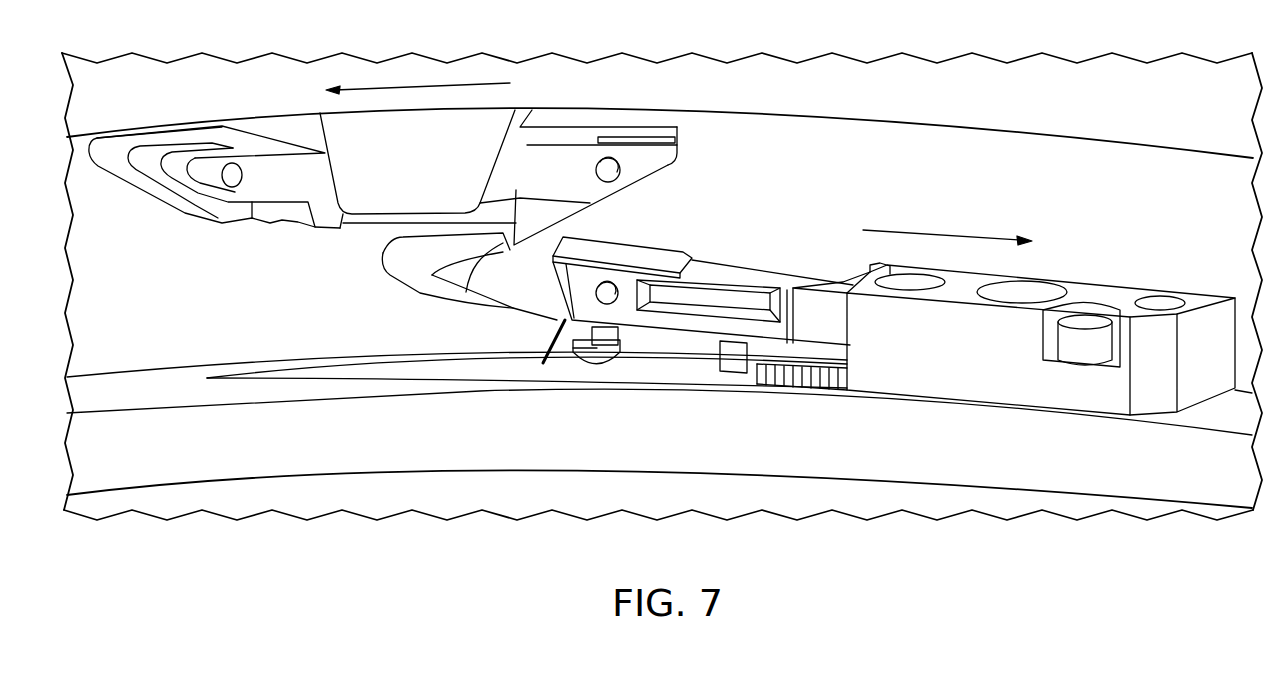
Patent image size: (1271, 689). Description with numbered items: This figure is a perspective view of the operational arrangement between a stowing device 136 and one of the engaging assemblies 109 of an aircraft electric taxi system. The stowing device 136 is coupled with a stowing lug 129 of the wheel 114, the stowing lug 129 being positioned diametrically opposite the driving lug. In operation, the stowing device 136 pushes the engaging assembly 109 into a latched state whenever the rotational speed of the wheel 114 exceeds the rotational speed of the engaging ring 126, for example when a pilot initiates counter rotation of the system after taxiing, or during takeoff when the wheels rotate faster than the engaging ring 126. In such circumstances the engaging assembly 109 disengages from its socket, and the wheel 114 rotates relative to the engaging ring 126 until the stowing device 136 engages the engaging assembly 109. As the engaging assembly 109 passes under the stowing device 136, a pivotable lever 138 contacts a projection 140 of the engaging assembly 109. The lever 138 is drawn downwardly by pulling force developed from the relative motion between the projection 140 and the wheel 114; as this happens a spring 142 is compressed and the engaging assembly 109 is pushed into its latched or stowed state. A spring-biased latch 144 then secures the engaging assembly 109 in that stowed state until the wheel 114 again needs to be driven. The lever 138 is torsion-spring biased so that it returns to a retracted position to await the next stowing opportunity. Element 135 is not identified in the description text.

The engaging assembly 109 is at (778, 277).
The wheel 114 is at (562, 77).
The engaging ring 126 is at (160, 377).
The stowing lug 129 is at (438, 180).
The hook 135 is at (388, 277).
The stowing device 136 is at (340, 228).
The pivotable lever 138 is at (575, 208).
The projection 140 is at (466, 292).
The spring 142 is at (747, 378).
The spring-biased latch 144 is at (593, 360).